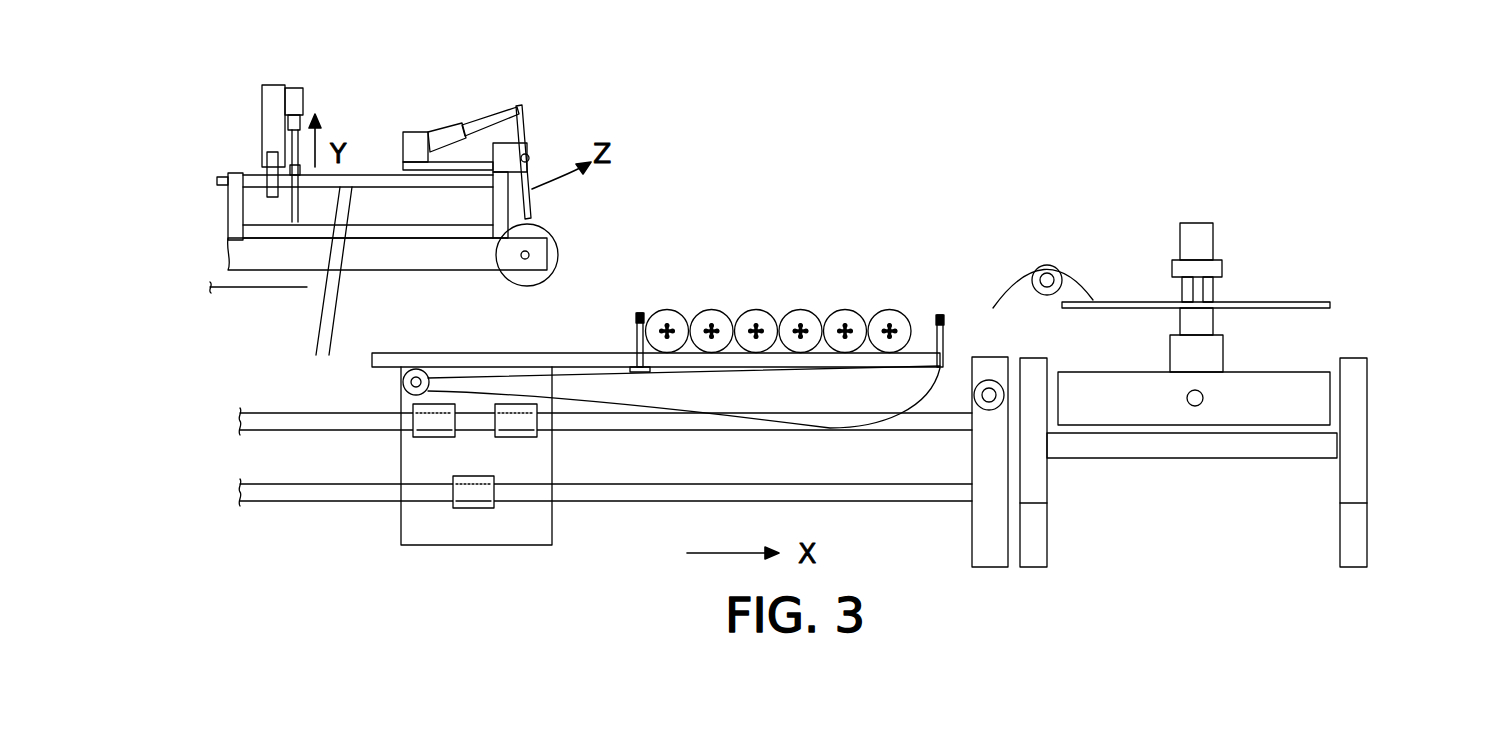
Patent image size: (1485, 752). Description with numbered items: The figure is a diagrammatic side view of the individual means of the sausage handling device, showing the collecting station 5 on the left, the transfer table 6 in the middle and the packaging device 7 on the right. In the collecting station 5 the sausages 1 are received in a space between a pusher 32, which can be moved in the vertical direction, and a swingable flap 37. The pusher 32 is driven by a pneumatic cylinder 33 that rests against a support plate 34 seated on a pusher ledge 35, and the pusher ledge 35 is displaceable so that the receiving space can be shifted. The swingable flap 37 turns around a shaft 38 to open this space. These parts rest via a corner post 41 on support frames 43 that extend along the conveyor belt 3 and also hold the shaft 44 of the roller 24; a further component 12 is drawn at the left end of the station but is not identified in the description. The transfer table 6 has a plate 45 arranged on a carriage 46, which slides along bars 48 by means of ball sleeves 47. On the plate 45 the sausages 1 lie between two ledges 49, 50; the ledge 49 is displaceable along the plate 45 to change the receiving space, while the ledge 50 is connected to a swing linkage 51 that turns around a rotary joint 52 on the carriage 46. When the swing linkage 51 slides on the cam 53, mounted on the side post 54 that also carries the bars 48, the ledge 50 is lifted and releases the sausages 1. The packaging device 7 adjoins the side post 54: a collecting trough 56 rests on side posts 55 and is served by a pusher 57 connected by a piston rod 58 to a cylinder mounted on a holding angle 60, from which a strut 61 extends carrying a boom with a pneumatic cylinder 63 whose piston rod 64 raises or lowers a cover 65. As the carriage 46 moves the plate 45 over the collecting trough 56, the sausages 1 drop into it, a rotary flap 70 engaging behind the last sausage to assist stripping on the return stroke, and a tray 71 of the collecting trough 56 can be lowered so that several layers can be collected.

The sausages 1 is at (880, 307).
The conveyor belt 3 is at (307, 288).
The collecting station 5 is at (638, 161).
The transfer table 6 is at (749, 258).
The packaging device 7 is at (1420, 202).
The frame beam 12 is at (232, 197).
The roller 24 is at (548, 262).
The pusher 32 is at (293, 220).
The pneumatic cylinder 33 is at (300, 99).
The support plate 34 is at (262, 98).
The pusher ledge 35 is at (267, 152).
The swingable flap 37 is at (530, 205).
The shaft 38 is at (527, 157).
The corner post 41 is at (493, 198).
The support frames 43 is at (405, 267).
The shaft 44 is at (530, 255).
The plate 45 is at (597, 352).
The carriage 46 is at (543, 530).
The ball sleeves 47 is at (510, 423).
The bars 48 is at (603, 425).
The ledge 49 is at (641, 312).
The ledge 50 is at (942, 314).
The swing linkage 51 is at (777, 428).
The rotary joint 52 is at (403, 382).
The cam 53 is at (985, 396).
The side post 54 is at (980, 522).
The side posts 55 is at (1042, 520).
The collecting trough 56 is at (1360, 376).
The pusher 57 is at (1322, 372).
The piston rod 58 is at (1203, 398).
The holding angle 60 is at (1213, 353).
The strut 61 is at (1188, 325).
The pneumatic cylinder 63 is at (1213, 236).
The piston rod 64 is at (1213, 292).
The cover 65 is at (1313, 301).
The rotary flap 70 is at (1078, 283).
The tray 71 is at (1280, 447).